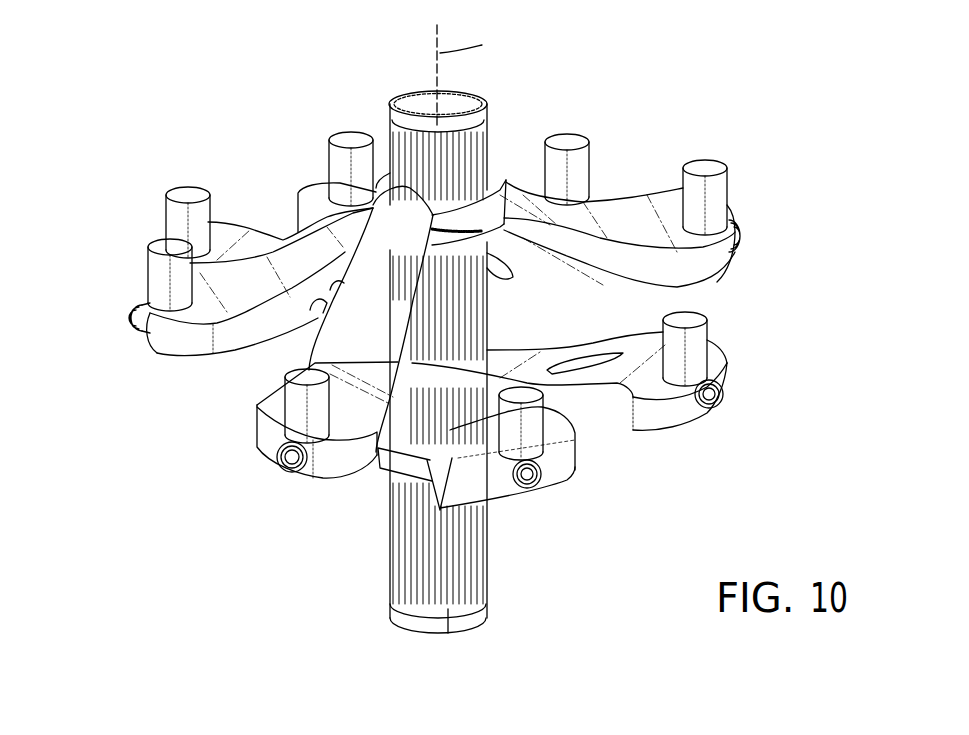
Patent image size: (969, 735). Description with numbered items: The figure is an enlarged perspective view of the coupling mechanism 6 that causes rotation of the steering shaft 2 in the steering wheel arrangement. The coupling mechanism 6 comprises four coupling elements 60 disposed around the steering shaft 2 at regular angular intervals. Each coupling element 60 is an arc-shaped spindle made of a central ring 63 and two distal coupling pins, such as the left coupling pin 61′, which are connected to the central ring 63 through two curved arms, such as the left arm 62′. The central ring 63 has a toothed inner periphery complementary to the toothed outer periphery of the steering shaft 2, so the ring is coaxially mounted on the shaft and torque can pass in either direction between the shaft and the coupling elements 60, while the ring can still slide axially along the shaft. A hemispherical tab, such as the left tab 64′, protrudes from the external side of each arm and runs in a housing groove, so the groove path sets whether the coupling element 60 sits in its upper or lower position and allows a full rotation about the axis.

The steering shaft 2 is at (485, 606).
The coupling mechanism 6 is at (706, 82).
The coupling element 60 is at (664, 442).
The left coupling pin 61′ is at (178, 186).
The left arm 62′ is at (233, 348).
The central ring 63 is at (494, 162).
The left tab 64′ is at (121, 322).